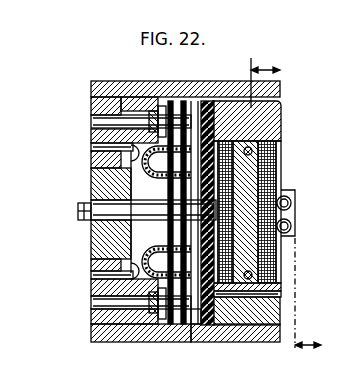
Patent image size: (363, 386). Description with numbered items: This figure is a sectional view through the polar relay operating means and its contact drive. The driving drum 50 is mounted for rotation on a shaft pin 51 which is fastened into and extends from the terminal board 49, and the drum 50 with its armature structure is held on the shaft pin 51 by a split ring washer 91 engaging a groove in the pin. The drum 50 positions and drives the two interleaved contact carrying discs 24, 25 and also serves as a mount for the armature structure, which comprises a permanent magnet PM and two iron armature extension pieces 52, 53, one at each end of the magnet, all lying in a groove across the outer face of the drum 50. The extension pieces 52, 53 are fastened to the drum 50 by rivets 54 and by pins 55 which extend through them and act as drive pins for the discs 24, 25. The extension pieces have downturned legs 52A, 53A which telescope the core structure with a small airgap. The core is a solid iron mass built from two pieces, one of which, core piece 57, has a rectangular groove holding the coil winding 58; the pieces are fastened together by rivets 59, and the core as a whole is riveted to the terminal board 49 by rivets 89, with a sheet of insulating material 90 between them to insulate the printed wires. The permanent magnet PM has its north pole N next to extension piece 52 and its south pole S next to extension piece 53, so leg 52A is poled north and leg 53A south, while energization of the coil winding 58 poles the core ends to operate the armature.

The downturned leg 52A is at (272, 78).
The north pole N is at (273, 86).
The rivets 59 is at (268, 136).
The coil winding 58 is at (273, 169).
The south pole S is at (272, 319).
The rivets 89 is at (255, 285).
The core piece 57 is at (262, 306).
The downturned leg 53A is at (258, 331).
The driving drum 50 is at (122, 320).
The terminal board 49 is at (186, 102).
The contact carrying disc 25 is at (179, 316).
The sheet of insulating material 90 is at (200, 318).
The pins 55 is at (86, 115).
The armature extension piece 52 is at (86, 126).
The rivets 54 is at (86, 140).
The permanent magnet PM is at (92, 247).
The armature extension piece 53 is at (90, 278).
The shaft pin 51 is at (100, 208).
The split ring washer 91 is at (77, 193).
The contact carrying disc 24 is at (151, 341).